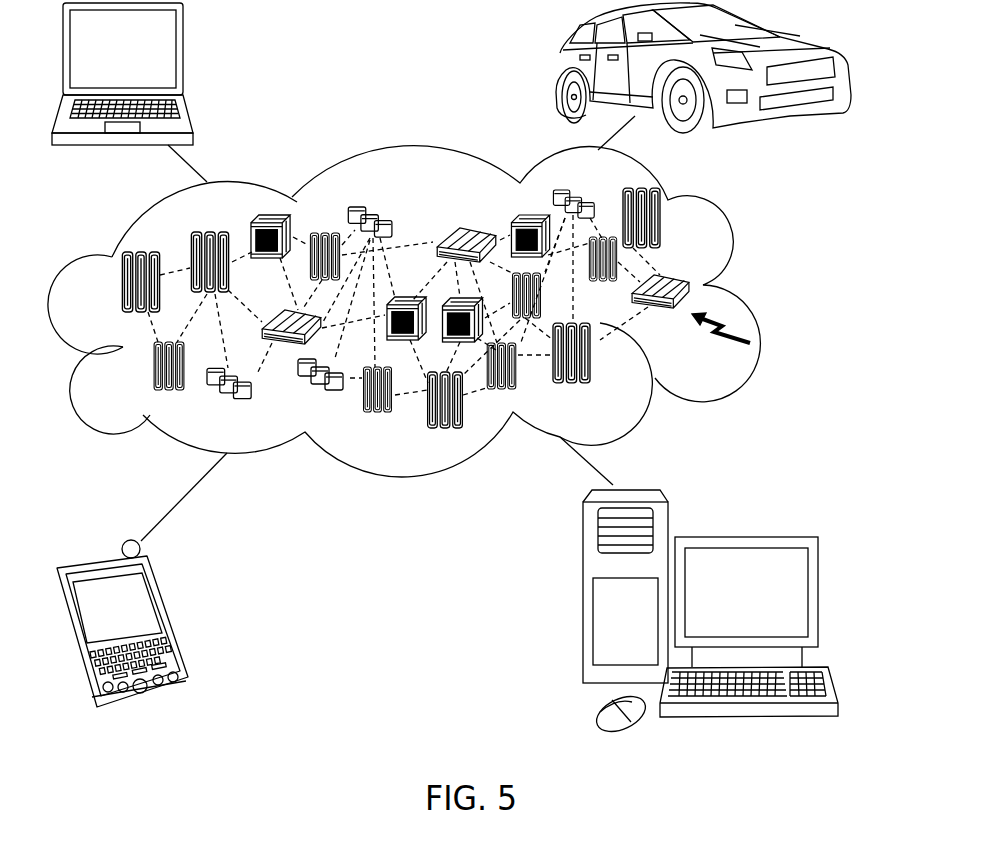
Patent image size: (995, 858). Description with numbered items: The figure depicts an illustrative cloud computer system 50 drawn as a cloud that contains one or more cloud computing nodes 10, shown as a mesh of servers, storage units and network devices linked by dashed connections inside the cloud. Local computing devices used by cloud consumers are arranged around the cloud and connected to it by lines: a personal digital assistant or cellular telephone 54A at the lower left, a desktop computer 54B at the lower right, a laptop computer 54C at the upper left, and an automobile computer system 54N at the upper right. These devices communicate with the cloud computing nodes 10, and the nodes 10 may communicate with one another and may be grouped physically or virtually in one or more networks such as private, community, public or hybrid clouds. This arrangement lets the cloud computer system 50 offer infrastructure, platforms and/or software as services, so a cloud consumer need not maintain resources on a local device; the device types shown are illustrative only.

The cloud computing node 10 is at (736, 336).
The cloud computer system 50 is at (745, 293).
The personal digital assistant or cellular telephone 54A is at (173, 617).
The desktop computer 54B is at (743, 537).
The laptop computer 54C is at (183, 57).
The automobile computer system 54N is at (557, 70).